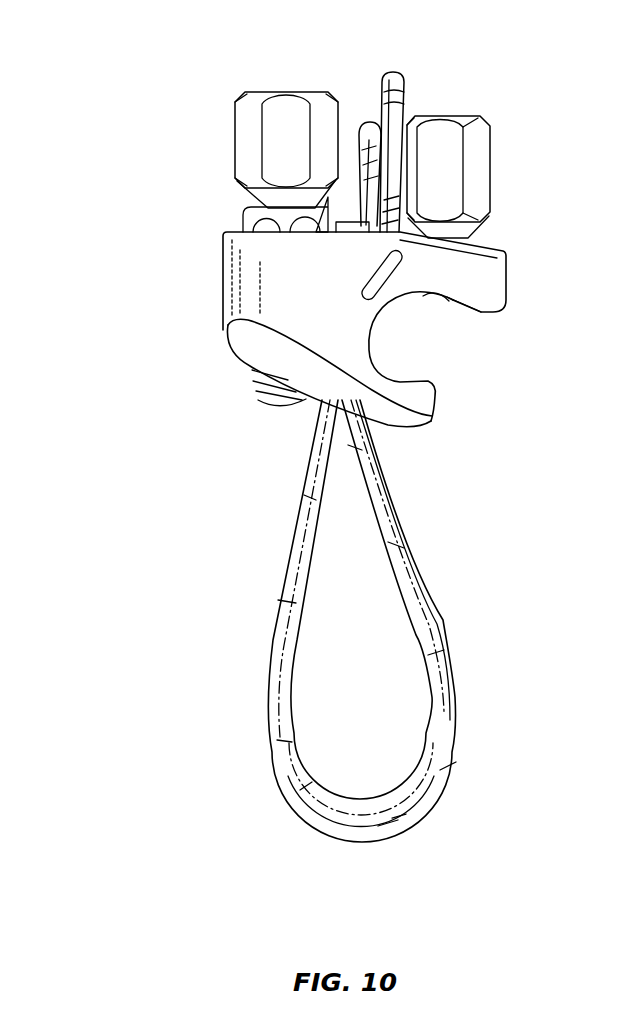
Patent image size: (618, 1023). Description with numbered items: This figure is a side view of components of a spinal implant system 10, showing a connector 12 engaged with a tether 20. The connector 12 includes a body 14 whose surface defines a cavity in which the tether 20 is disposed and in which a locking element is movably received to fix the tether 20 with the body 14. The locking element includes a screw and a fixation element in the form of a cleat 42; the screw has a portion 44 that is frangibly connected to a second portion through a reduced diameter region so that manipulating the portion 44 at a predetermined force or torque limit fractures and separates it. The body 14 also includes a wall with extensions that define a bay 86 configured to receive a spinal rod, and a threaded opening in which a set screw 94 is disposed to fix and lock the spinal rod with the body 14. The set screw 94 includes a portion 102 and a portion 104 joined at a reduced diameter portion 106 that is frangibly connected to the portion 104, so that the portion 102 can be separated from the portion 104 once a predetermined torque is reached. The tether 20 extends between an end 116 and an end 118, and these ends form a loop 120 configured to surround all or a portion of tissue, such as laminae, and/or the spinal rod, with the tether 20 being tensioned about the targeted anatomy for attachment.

The spinal implant system 10 is at (60, 47).
The connector 12 is at (162, 372).
The body 14 is at (272, 287).
The tether 20 is at (450, 700).
The cleat 42 is at (346, 227).
The portion 44 is at (258, 158).
The bay 86 is at (453, 342).
The set screw 94 is at (442, 133).
The portion 102 is at (477, 160).
The portion 104 is at (447, 297).
The reduced diameter portion 106 is at (463, 240).
The end 116 is at (367, 133).
The end 118 is at (403, 86).
The loop 120 is at (383, 807).